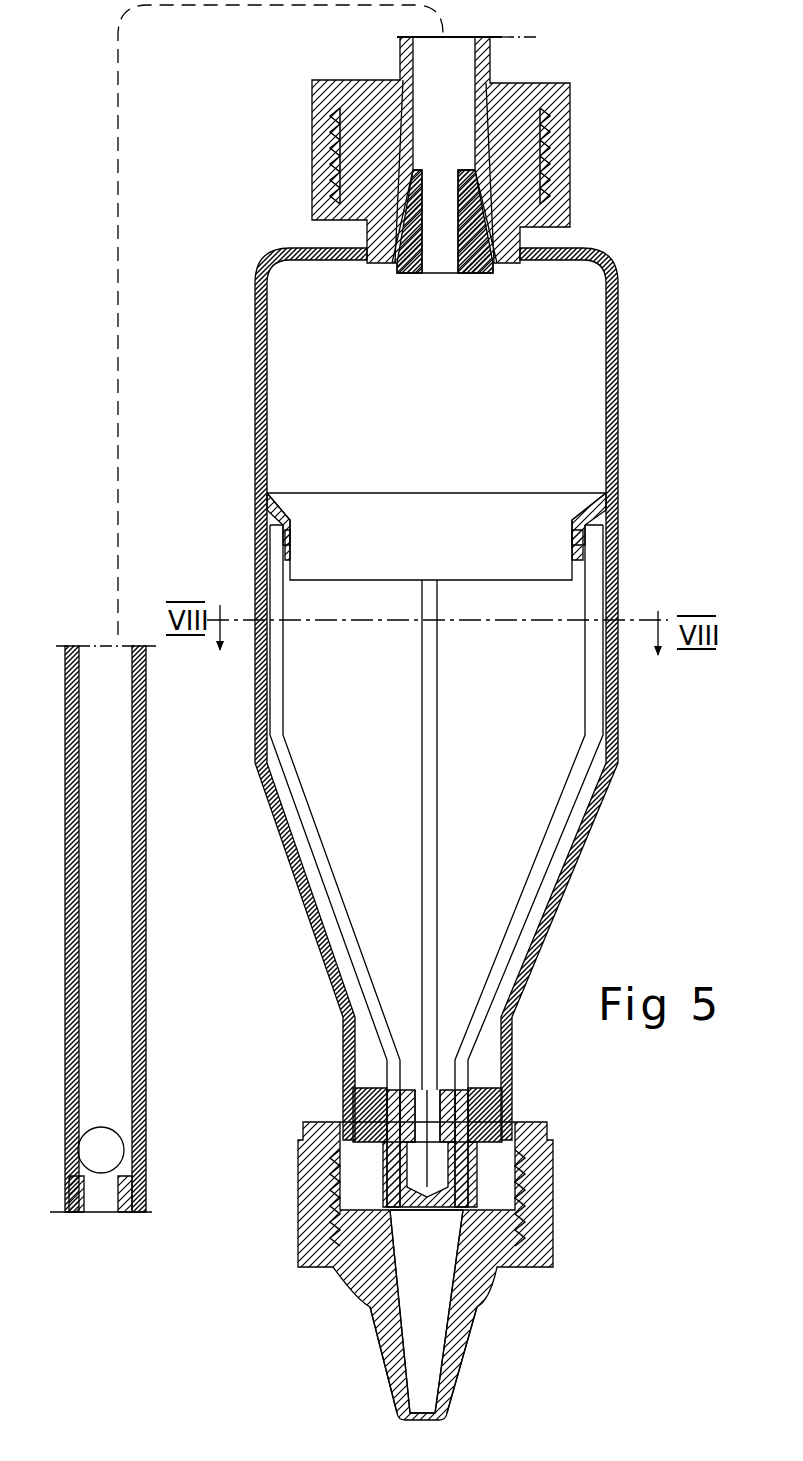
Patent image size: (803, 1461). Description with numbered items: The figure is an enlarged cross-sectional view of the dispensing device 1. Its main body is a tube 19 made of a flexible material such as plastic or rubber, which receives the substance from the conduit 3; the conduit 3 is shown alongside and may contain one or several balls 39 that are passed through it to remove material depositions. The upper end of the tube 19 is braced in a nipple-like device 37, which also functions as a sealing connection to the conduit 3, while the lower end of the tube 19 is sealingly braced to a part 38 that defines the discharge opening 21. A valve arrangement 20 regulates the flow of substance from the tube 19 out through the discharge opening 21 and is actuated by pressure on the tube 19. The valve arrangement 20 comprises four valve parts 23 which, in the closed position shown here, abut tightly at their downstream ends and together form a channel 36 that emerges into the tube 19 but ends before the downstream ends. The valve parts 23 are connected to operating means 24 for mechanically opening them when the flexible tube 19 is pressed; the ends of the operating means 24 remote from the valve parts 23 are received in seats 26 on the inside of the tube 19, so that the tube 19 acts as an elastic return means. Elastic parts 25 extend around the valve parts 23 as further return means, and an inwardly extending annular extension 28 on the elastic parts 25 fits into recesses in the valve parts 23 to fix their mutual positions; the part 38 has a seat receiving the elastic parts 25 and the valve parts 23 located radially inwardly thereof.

The dispensing device 1 is at (652, 600).
The conduit 3 is at (146, 1030).
The tube 19 is at (618, 380).
The valve arrangement 20 is at (401, 1035).
The discharge opening 21 is at (478, 1300).
The valve parts 23 is at (455, 1200).
The operating means 24 is at (300, 805).
The elastic parts 25 is at (365, 1112).
The seats 26 is at (580, 553).
The extension 28 is at (450, 1282).
The channel 36 is at (433, 1130).
The nipple-like device 37 is at (614, 158).
The part defining the discharge opening 38 is at (594, 1190).
The balls 39 is at (104, 1150).